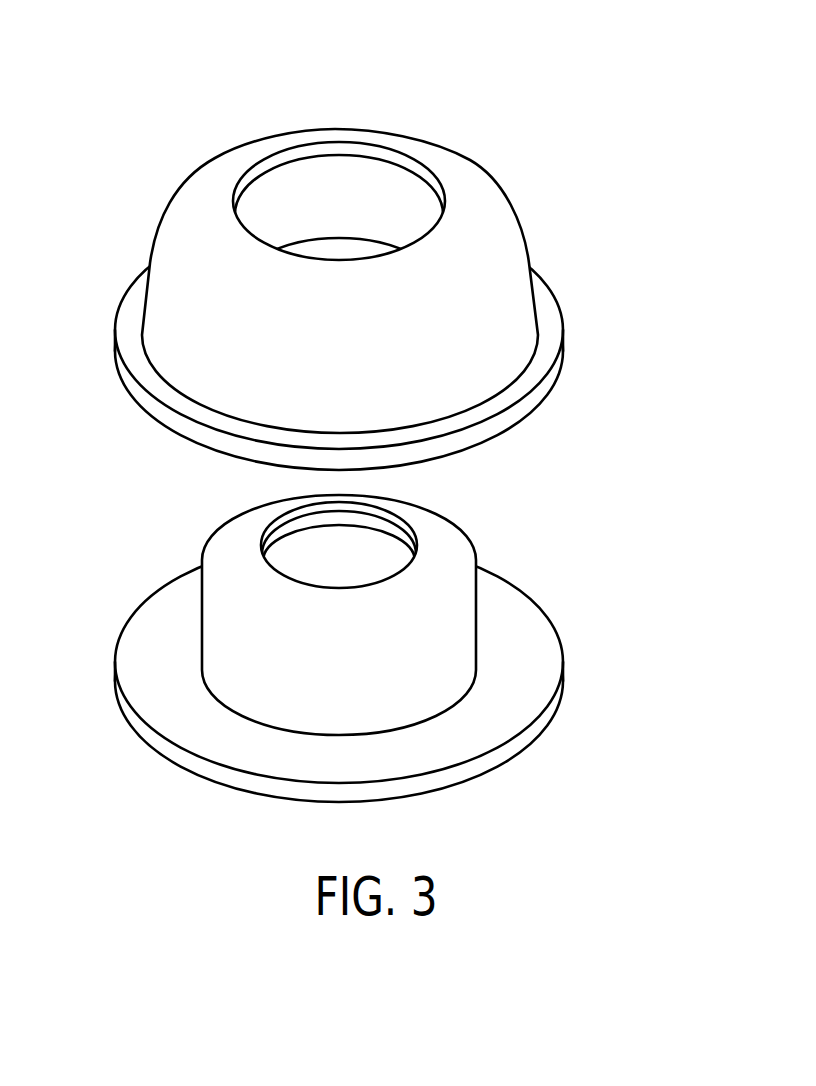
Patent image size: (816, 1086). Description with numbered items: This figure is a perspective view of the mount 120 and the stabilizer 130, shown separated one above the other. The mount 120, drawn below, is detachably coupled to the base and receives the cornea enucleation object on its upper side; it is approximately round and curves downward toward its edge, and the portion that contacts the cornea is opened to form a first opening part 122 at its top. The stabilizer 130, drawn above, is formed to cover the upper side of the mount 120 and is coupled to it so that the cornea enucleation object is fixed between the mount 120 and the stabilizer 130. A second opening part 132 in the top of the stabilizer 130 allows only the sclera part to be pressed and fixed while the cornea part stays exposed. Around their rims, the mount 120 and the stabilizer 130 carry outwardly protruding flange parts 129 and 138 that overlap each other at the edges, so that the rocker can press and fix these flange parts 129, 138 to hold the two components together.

The mount 120 is at (403, 628).
The first opening part 122 is at (394, 520).
The flange part 129 is at (518, 695).
The stabilizer 130 is at (371, 239).
The second opening part 132 is at (392, 157).
The flange part 138 is at (552, 318).